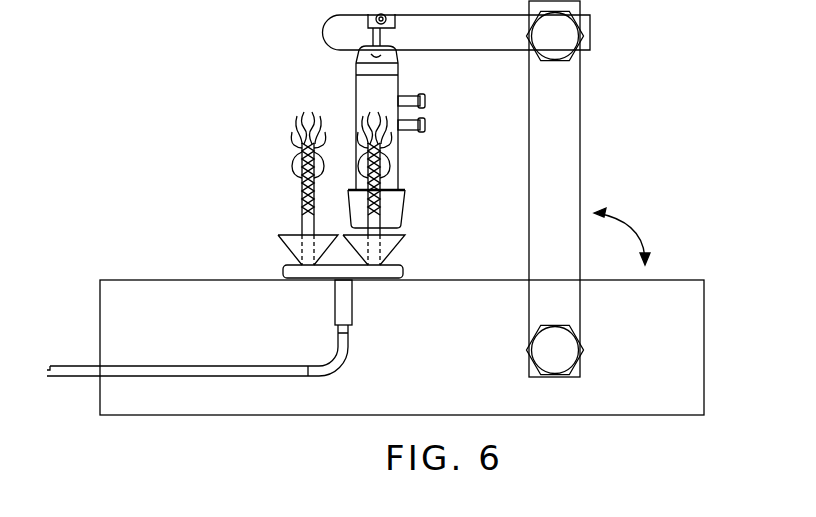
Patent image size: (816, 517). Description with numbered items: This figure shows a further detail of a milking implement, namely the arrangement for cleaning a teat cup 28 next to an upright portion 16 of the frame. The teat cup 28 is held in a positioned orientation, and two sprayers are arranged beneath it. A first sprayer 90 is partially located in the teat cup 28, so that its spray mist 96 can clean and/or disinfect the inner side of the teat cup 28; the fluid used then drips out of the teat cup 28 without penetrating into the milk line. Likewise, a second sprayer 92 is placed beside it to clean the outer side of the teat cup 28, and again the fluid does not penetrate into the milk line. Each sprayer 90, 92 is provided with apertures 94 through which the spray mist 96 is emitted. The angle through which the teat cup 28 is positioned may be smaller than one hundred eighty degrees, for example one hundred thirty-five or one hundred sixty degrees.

The upright portion 16 is at (698, 350).
The teat cup 28 is at (377, 93).
The first sprayer 90 is at (375, 245).
The second sprayer 92 is at (308, 245).
The apertures 94 is at (313, 168).
The spray mist 96 is at (303, 122).